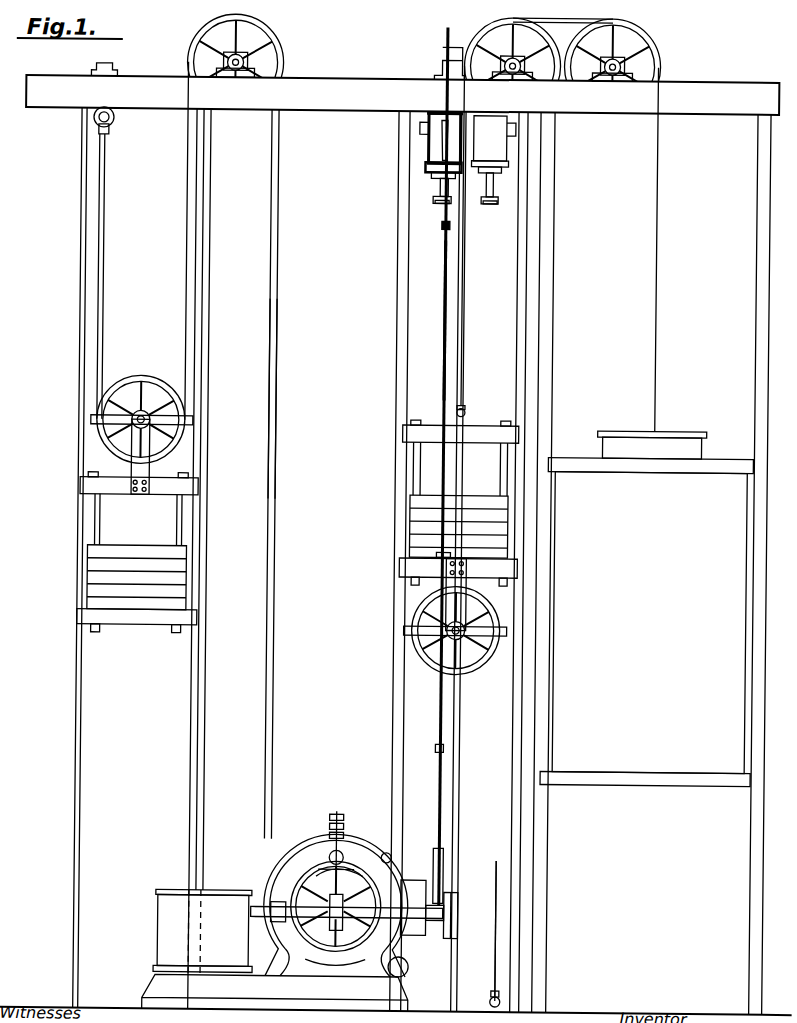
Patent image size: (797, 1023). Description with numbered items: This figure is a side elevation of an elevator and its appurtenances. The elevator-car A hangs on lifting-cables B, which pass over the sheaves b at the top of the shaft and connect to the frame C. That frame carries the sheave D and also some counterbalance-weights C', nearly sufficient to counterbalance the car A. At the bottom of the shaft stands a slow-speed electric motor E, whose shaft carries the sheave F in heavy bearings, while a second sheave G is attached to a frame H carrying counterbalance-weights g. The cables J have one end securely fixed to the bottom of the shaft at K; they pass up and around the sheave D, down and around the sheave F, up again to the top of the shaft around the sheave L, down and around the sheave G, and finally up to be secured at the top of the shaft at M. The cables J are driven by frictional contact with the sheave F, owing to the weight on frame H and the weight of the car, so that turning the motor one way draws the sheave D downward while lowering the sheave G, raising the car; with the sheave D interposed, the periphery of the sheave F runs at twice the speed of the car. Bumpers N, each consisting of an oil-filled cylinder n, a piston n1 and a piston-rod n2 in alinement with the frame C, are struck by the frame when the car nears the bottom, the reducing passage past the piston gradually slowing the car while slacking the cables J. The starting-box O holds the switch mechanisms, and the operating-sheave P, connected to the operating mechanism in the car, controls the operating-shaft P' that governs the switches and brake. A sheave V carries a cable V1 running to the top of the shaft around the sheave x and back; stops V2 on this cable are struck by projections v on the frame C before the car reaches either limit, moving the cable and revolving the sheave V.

The elevator-car A is at (647, 609).
The lifting-cables B is at (462, 375).
The frame C is at (459, 525).
The counterbalance-weights C' is at (458, 526).
The sheave D is at (452, 698).
The slow-speed electric motor E is at (328, 806).
The sheave F is at (318, 840).
The sheave G is at (156, 362).
The frame H is at (160, 521).
The counterbalance-weights g is at (124, 570).
The cables J is at (276, 350).
The fixed end at bottom of shaft K is at (497, 990).
The sheave L is at (272, 50).
The securing point at top of shaft M is at (108, 124).
The bumpers N is at (459, 216).
The starting-box O is at (203, 930).
The operating-sheave P is at (459, 915).
The operating-shaft P' is at (430, 929).
The sheave V is at (451, 866).
The cable V1 is at (432, 320).
The stops V2 is at (444, 230).
The sheaves b is at (545, 40).
The cylinder n is at (424, 150).
The piston n1 is at (428, 170).
The piston-rod n2 is at (437, 186).
The projections v is at (452, 555).
The sheave x is at (446, 36).